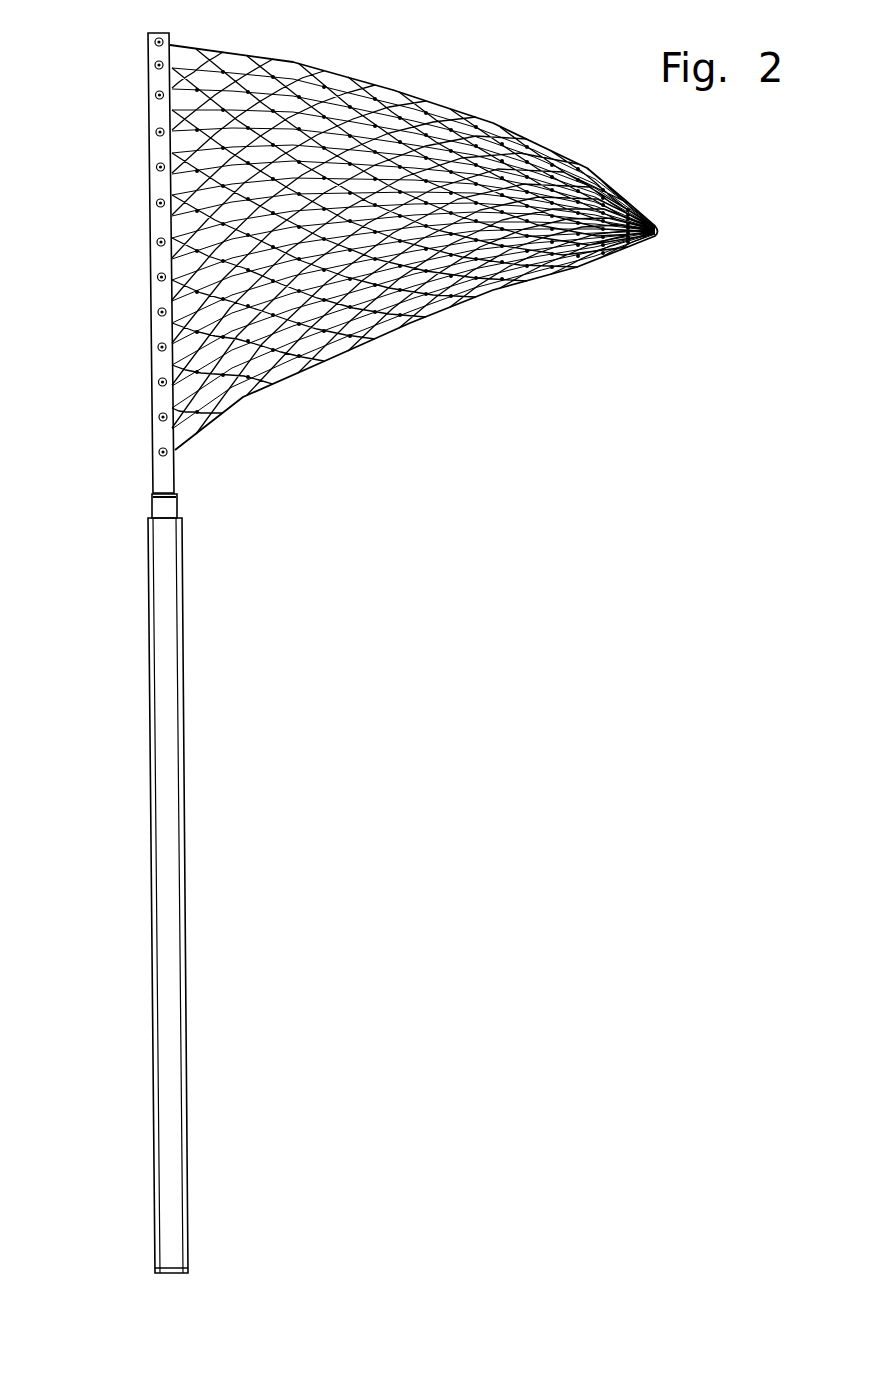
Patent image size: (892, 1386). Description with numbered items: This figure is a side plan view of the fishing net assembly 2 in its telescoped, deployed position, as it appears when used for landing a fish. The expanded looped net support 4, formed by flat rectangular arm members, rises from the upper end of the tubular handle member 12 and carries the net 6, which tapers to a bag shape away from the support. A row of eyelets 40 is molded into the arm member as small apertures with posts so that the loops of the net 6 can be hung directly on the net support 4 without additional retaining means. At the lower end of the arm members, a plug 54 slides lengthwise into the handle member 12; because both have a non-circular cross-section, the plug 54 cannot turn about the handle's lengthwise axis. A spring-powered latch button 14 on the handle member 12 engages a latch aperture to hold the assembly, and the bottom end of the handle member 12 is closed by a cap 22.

The fishing net assembly 2 is at (130, 348).
The net support 4 is at (158, 210).
The eyelets 40 is at (157, 95).
The net 6 is at (413, 330).
The plug 54 is at (167, 508).
The latch button 14 is at (150, 600).
The handle member 12 is at (282, 970).
The cap 22 is at (180, 1272).